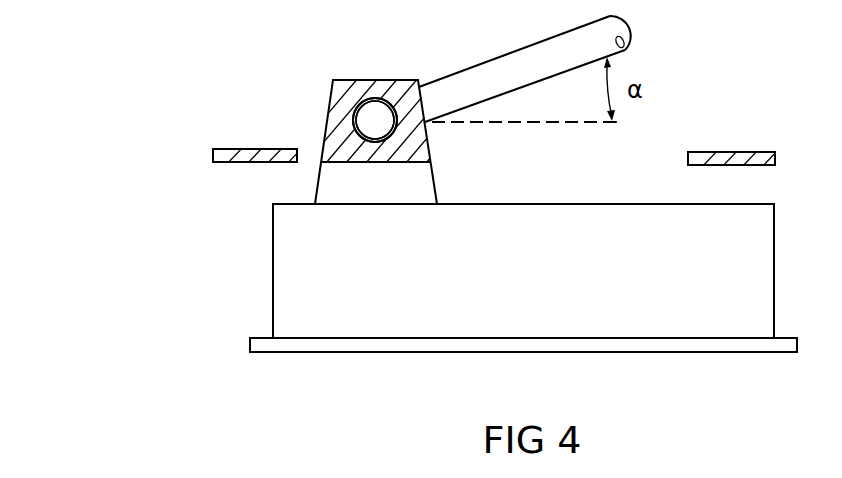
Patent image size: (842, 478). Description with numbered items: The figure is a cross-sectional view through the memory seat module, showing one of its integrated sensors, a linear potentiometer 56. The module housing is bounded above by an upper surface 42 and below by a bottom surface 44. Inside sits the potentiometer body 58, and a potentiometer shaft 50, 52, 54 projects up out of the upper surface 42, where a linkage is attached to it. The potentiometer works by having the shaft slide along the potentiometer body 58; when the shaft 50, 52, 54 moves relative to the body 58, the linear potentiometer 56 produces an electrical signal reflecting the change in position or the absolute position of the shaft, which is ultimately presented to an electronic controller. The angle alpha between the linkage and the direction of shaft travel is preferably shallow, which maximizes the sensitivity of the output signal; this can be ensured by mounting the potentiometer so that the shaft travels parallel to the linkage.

The upper surface 42 is at (752, 152).
The bottom surface 44 is at (770, 354).
The potentiometer shaft 50 is at (380, 86).
The potentiometer shaft 52 is at (375, 120).
The potentiometer shaft 54 is at (375, 120).
The linear potentiometer 56 is at (230, 276).
The potentiometer body 58 is at (322, 292).